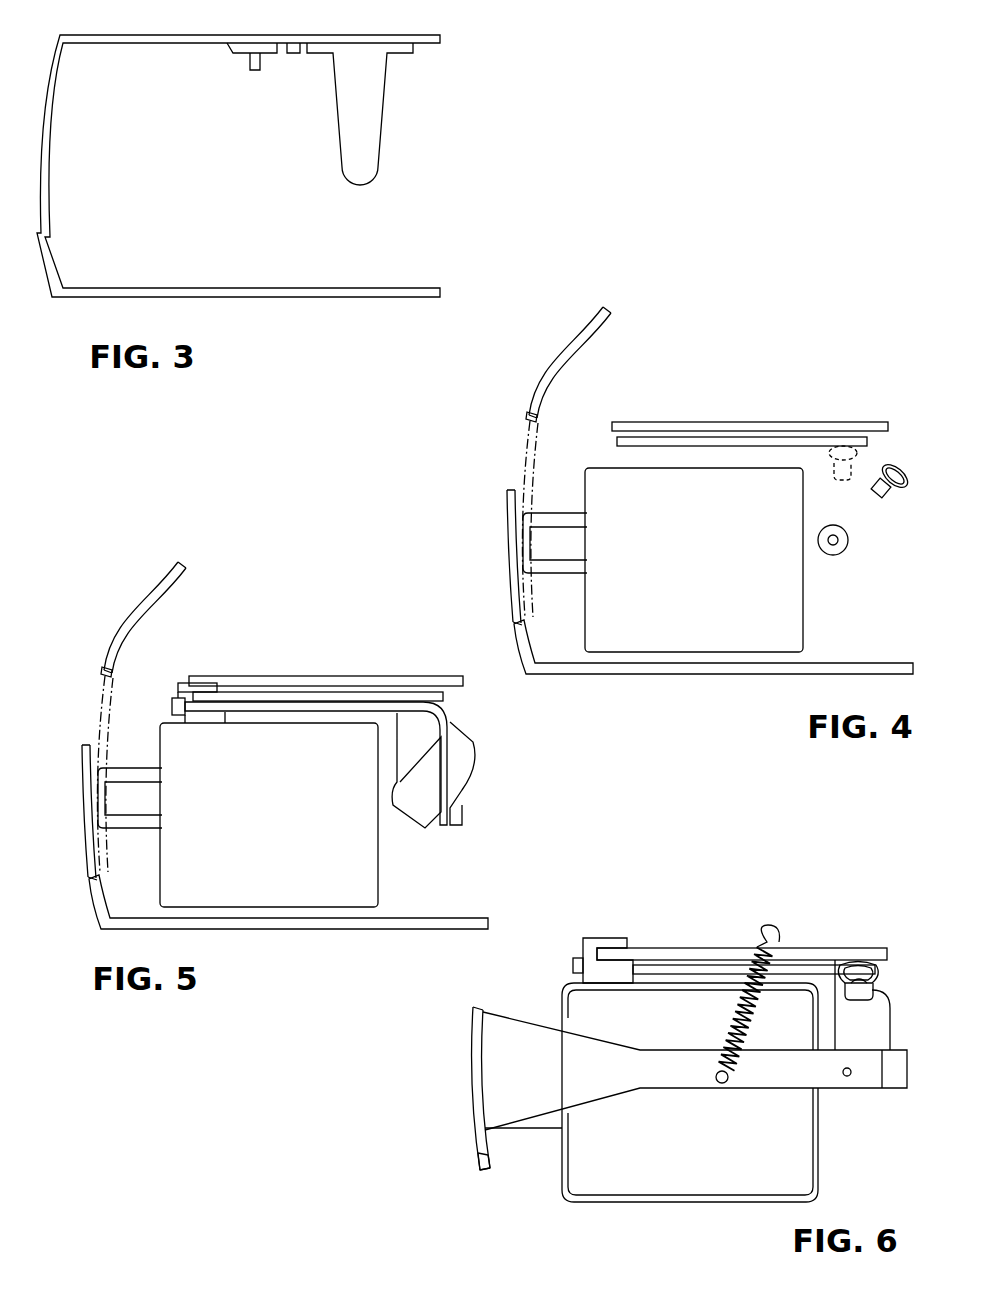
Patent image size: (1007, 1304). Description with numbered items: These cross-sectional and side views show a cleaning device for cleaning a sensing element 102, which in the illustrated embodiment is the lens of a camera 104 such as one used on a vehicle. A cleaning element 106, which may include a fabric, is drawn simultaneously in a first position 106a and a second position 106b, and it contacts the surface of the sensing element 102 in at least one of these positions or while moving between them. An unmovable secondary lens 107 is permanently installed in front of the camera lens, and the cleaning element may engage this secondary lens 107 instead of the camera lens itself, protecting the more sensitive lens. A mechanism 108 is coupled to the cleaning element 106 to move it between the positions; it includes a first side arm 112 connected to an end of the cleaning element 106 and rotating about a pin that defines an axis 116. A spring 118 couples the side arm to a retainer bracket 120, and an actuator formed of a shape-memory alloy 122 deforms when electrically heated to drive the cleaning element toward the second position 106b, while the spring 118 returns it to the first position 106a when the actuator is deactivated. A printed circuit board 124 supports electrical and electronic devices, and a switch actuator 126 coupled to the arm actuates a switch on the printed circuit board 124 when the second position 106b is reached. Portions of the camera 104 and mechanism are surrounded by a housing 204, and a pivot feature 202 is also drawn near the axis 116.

In FIG. 4, the sensing element 102 is at (555, 543).
In FIG. 5, the sensing element 102 is at (120, 773).
In FIG. 6, the sensing element 102 is at (547, 1123).
In FIG. 4, the camera 104 is at (788, 590).
In FIG. 5, the camera 104 is at (365, 840).
In FIG. 6, the camera 104 is at (805, 1150).
In FIG. 4, the cleaning element 106 is at (515, 463).
In FIG. 5, the cleaning element 106 is at (110, 708).
In FIG. 6, the cleaning element 106 is at (437, 1092).
In FIG. 4, the first position 106a is at (552, 352).
In FIG. 5, the first position 106a is at (120, 606).
In FIG. 4, the second position 106b is at (498, 570).
In FIG. 5, the second position 106b is at (89, 812).
In FIG. 6, the second position 106b is at (470, 1123).
In FIG. 4, the secondary lens 107 is at (508, 438).
In FIG. 5, the secondary lens 107 is at (93, 732).
In FIG. 6, the mechanism 108 is at (753, 921).
In FIG. 6, the first side arm 112 is at (672, 1078).
In FIG. 4, the axis 116 is at (871, 560).
In FIG. 6, the axis 116 is at (850, 1078).
In FIG. 6, the spring 118 is at (782, 940).
In FIG. 3, the retainer bracket 120 is at (372, 110).
In FIG. 4, the retainer bracket 120 is at (740, 422).
In FIG. 5, the retainer bracket 120 is at (268, 676).
In FIG. 5, the shape-memory alloy 122 is at (438, 715).
In FIG. 4, the printed circuit board 124 is at (667, 432).
In FIG. 5, the printed circuit board 124 is at (328, 692).
In FIG. 6, the printed circuit board 124 is at (658, 948).
In FIG. 4, the switch actuator 126 is at (840, 450).
In FIG. 6, the switch actuator 126 is at (875, 990).
In FIG. 4, the pivot 202 is at (843, 553).
In FIG. 3, the housing 204 is at (187, 43).
In FIG. 4, the housing 204 is at (757, 671).
In FIG. 5, the housing 204 is at (272, 928).